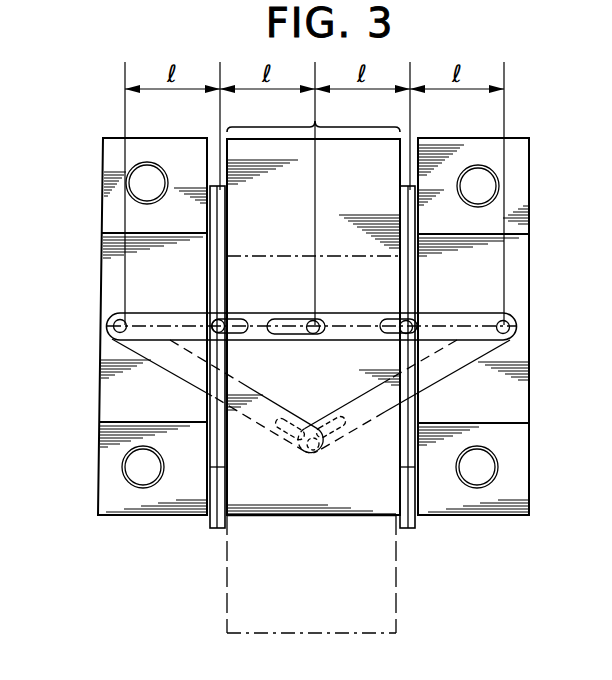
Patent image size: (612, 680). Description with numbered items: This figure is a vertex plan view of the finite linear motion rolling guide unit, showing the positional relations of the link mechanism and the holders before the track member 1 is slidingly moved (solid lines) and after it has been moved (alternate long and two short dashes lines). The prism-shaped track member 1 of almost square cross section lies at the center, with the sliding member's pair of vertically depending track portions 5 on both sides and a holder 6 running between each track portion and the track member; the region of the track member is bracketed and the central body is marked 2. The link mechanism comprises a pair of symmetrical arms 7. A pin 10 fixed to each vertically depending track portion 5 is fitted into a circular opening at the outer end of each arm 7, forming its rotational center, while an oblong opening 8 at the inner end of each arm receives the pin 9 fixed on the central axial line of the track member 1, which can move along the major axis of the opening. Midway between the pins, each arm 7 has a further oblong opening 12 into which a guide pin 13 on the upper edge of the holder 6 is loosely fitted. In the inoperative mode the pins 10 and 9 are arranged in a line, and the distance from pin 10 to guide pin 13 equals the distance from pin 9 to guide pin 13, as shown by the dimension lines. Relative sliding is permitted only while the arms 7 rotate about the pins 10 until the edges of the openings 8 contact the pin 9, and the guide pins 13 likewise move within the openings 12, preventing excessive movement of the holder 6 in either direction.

The track member 1 is at (313, 113).
The central carrier block 2 is at (370, 184).
The vertically depending track portion 5 is at (118, 166).
The holder 6 is at (215, 448).
The arm 7 is at (252, 313).
The oblong opening 8 is at (292, 336).
The pin 9 is at (318, 322).
The pin 10 is at (123, 320).
The oblong opening 12 is at (425, 372).
The guide pin 13 is at (214, 322).